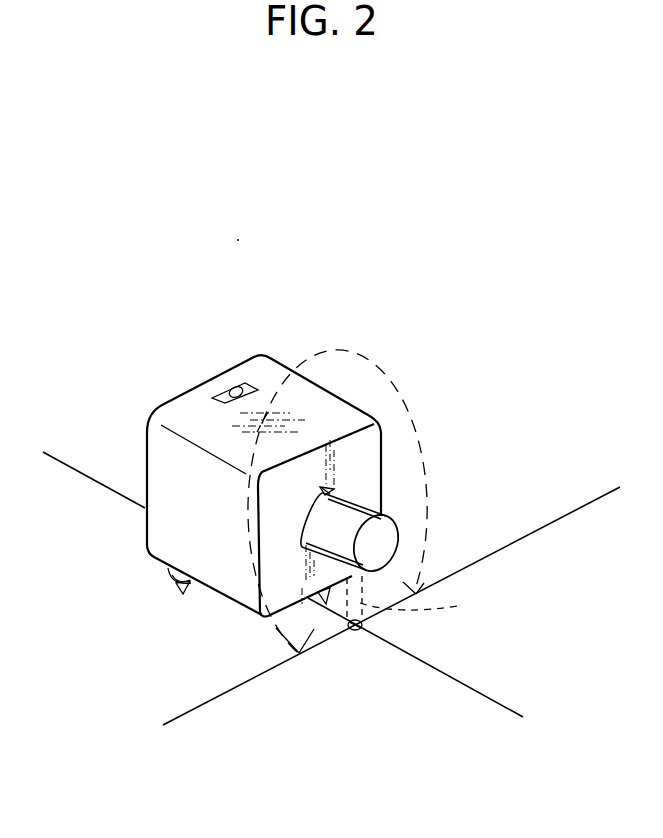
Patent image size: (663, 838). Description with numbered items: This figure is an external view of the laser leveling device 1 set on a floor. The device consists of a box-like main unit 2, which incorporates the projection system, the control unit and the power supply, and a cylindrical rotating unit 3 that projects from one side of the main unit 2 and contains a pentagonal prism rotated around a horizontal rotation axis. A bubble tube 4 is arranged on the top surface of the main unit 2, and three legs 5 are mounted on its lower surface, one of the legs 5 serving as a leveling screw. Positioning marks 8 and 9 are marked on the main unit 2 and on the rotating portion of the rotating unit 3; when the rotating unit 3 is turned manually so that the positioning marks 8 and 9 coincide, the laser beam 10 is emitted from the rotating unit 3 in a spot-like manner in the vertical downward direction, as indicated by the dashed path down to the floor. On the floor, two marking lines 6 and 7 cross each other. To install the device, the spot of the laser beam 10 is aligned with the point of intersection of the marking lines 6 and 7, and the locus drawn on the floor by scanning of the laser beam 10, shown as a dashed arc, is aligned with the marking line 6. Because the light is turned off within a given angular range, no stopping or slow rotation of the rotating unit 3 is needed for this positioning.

The laser leveling device 1 is at (258, 443).
The main unit 2 is at (149, 557).
The rotating unit 3 is at (382, 512).
The bubble tube 4 is at (218, 366).
The legs 5 is at (172, 582).
The marking line 6 is at (578, 508).
The marking line 7 is at (412, 658).
The positioning mark 8 is at (332, 488).
The positioning mark 9 is at (334, 491).
The laser beam 10 is at (456, 606).